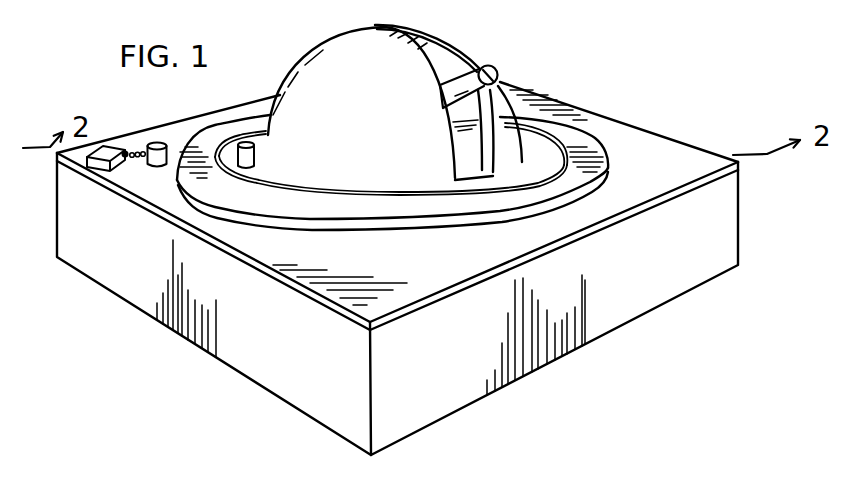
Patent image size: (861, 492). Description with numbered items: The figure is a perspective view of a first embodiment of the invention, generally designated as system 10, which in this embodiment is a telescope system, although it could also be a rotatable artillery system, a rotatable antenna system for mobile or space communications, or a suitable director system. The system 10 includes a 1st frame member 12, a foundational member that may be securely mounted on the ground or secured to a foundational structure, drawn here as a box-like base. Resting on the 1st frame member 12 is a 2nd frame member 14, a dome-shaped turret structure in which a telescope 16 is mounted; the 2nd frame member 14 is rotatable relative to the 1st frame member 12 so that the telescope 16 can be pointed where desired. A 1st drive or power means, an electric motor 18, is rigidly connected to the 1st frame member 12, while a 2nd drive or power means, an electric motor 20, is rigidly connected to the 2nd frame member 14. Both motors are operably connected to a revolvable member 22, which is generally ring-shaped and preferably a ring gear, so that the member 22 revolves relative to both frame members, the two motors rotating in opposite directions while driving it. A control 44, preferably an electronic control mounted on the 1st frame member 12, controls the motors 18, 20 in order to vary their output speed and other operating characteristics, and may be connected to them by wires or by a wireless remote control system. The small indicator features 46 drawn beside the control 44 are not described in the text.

The telescope system 10 is at (608, 105).
The 1st frame member 12 is at (663, 152).
The 2nd frame member 14 is at (283, 79).
The telescope 16 is at (497, 68).
The electric motor 18 is at (170, 141).
The electric motor 20 is at (255, 156).
The revolvable member 22 is at (368, 236).
The control 44 is at (103, 167).
The indicator lights 46 is at (138, 160).